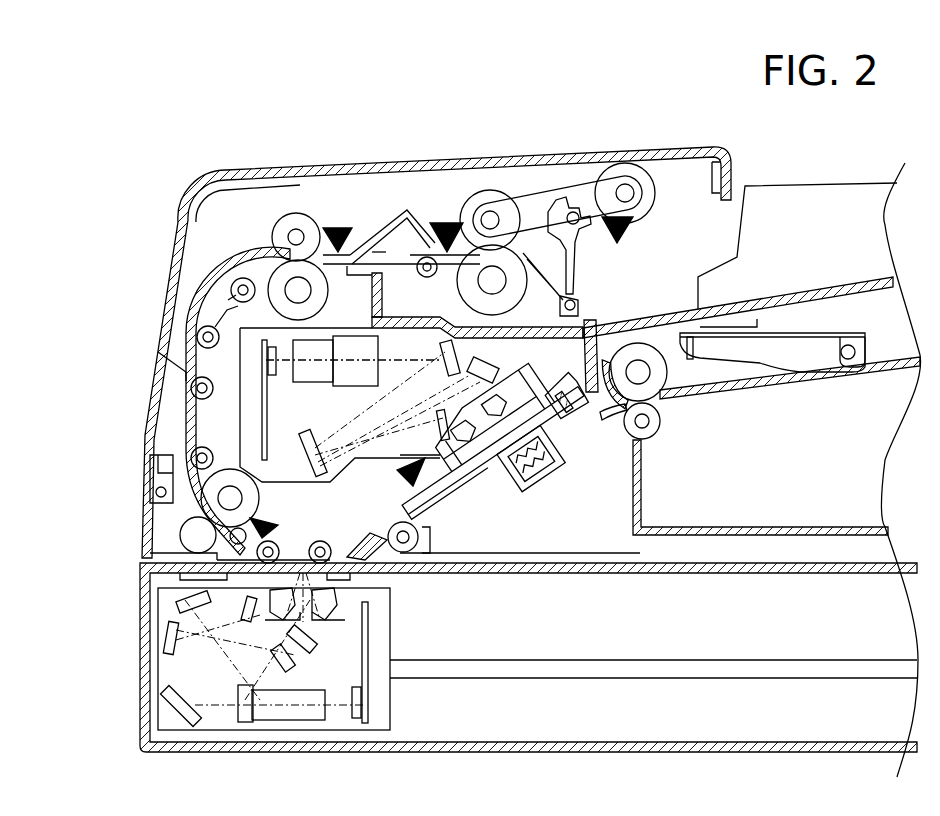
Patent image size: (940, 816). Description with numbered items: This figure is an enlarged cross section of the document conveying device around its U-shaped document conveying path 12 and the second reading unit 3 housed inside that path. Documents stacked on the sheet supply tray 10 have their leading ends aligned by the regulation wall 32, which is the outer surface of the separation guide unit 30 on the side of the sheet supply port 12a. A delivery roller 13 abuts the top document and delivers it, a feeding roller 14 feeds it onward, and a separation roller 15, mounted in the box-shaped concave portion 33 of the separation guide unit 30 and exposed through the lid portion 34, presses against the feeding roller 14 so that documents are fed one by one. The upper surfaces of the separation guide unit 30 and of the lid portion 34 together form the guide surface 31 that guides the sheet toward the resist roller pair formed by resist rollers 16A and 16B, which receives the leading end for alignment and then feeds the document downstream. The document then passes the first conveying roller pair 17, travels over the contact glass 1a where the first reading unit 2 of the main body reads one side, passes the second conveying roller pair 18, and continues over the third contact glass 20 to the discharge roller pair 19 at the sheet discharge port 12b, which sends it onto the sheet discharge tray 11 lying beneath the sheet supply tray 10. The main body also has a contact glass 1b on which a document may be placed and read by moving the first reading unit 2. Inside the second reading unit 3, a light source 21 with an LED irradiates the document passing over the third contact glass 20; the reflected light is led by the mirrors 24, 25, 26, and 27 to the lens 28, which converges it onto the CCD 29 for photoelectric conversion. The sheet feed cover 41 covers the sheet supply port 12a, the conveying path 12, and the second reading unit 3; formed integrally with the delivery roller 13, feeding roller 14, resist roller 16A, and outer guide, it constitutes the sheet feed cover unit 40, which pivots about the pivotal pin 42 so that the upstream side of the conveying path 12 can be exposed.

The contact glass 1a is at (253, 570).
The contact glass 1b is at (790, 575).
The first reading unit 2 is at (148, 640).
The second reading unit 3 is at (226, 424).
The sheet supply tray 10 is at (823, 280).
The sheet discharge tray 11 is at (823, 527).
The document conveying path 12 is at (227, 285).
The sheet supply port 12a is at (615, 268).
The sheet discharge port 12b is at (689, 417).
The delivery roller 13 is at (625, 167).
The feeding roller 14 is at (485, 197).
The separation roller 15 is at (463, 262).
The resist roller 16A is at (285, 225).
The resist roller 16B is at (300, 262).
The first conveying roller pair 17 is at (185, 535).
The second conveying roller pair 18 is at (402, 573).
The discharge roller pair 19 is at (650, 435).
The third contact glass 20 is at (472, 467).
The light source 21 is at (557, 447).
The mirror 24 is at (470, 420).
The mirror 25 is at (315, 450).
The mirror 26 is at (450, 457).
The mirror 27 is at (452, 352).
The lens 28 is at (297, 343).
The CCD 29 is at (240, 345).
The separation guide unit 30 is at (325, 252).
The guide surface 31 is at (383, 242).
The regulation wall 32 is at (602, 312).
The box-shaped concave portion 33 is at (410, 293).
The lid portion 34 is at (525, 255).
The sheet feed cover unit 40 is at (166, 182).
The sheet feed cover 41 is at (215, 168).
The pivotal pin 42 is at (150, 490).